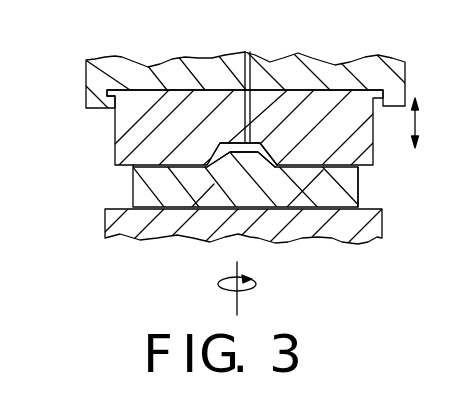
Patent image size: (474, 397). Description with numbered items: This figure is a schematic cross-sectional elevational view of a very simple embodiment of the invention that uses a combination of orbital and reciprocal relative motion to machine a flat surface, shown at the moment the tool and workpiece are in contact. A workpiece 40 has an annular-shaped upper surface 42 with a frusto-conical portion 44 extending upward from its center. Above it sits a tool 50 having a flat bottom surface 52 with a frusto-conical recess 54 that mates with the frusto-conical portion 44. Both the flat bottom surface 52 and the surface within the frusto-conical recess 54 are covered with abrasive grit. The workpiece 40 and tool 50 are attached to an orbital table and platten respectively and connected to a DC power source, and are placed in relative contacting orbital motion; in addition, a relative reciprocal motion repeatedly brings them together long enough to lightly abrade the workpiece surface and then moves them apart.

The workpiece 40 is at (133, 201).
The annular-shaped upper surface 42 is at (134, 175).
The frusto-conical portion 44 is at (228, 160).
The tool 50 is at (122, 128).
The flat bottom surface 52 is at (358, 168).
The frusto-conical recess 54 is at (269, 140).